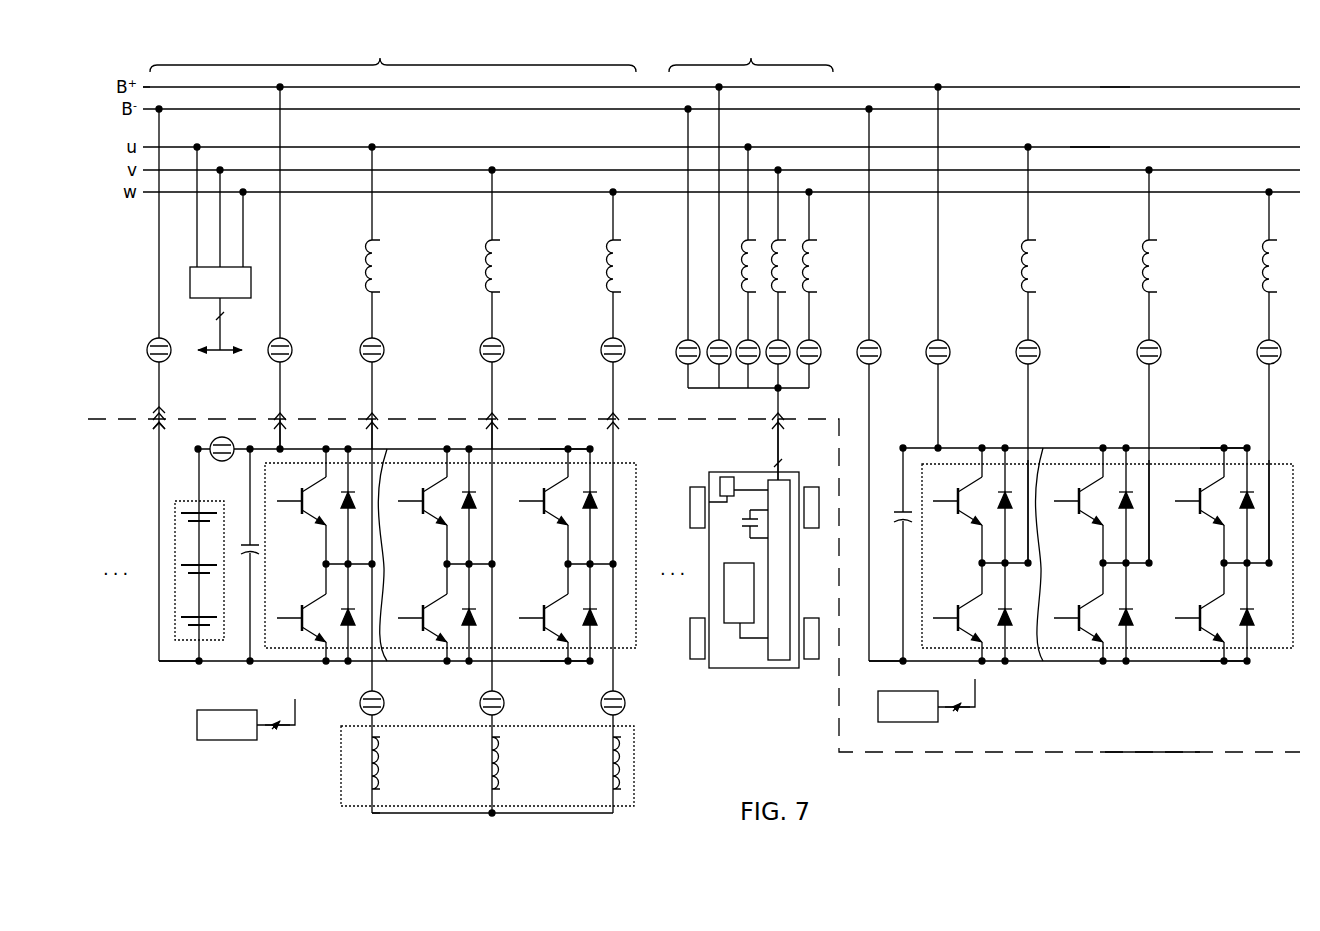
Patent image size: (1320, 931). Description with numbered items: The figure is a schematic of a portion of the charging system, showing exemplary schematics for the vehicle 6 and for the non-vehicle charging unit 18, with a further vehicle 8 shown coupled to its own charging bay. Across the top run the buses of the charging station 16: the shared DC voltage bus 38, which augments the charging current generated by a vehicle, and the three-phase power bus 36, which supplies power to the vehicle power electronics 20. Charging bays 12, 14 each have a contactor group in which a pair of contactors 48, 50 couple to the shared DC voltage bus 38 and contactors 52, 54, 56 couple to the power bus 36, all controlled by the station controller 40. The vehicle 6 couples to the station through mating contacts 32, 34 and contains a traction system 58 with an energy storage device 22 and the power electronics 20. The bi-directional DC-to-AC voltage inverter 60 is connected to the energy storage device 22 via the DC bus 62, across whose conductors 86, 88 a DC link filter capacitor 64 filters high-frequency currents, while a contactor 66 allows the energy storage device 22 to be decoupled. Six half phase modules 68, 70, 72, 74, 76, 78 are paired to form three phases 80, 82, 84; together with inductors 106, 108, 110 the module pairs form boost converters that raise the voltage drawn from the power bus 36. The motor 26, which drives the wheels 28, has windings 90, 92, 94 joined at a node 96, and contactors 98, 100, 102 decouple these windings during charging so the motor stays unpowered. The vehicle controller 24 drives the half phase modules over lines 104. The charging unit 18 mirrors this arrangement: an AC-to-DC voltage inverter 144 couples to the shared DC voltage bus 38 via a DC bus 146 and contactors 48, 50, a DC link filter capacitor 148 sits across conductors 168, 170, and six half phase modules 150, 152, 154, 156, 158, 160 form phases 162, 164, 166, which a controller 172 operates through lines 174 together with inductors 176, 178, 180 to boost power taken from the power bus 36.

The vehicle 6 is at (250, 789).
The vehicle 8 is at (742, 668).
The charging bay 12 is at (393, 54).
The charging bay 14 is at (751, 54).
The charging station 16 is at (140, 254).
The non-vehicle charging unit 18 is at (1123, 698).
The power electronics 20 is at (167, 733).
The energy storage device 22 is at (199, 501).
The controller 24 is at (482, 651).
The motor 26 is at (634, 757).
The driving wheels 28 is at (690, 491).
The mating contact 32 is at (153, 423).
The mating contact 34 is at (153, 414).
The power bus 36 is at (1090, 192).
The shared DC voltage bus 38 is at (1115, 87).
The controller 40 is at (220, 308).
The contactor 48 is at (152, 344).
The contactor 50 is at (274, 344).
The contactor 52 is at (365, 344).
The contactor 54 is at (486, 344).
The contactor 56 is at (607, 344).
The traction system 58 is at (143, 668).
The bi-directional DC-to-AC voltage inverter 60 is at (636, 545).
The DC bus 62 is at (392, 555).
The DC link filter capacitor 64 is at (250, 545).
The contactor 66 is at (231, 457).
The half phase module 68 is at (304, 514).
The half phase module 70 is at (304, 633).
The half phase module 72 is at (424, 514).
The half phase module 74 is at (424, 633).
The half phase module 76 is at (545, 514).
The half phase module 78 is at (545, 633).
The phase 80 is at (338, 432).
The phase 82 is at (458, 432).
The phase 84 is at (578, 432).
The conductor 86 is at (560, 449).
The conductor 88 is at (565, 663).
The winding 90 is at (384, 768).
The winding 92 is at (504, 768).
The winding 94 is at (610, 754).
The node 96 is at (494, 816).
The contactor 98 is at (384, 698).
The contactor 100 is at (504, 698).
The contactor 102 is at (625, 698).
The lines 104 is at (286, 728).
The inductor 106 is at (376, 258).
The inductor 108 is at (496, 258).
The inductor 110 is at (610, 258).
The AC-to-DC voltage inverter 144 is at (920, 462).
The DC bus 146 is at (1107, 554).
The DC link filter capacitor 148 is at (903, 512).
The half phase module 150 is at (959, 514).
The half phase module 152 is at (959, 633).
The half phase module 154 is at (1080, 514).
The half phase module 156 is at (1080, 633).
The half phase module 158 is at (1200, 514).
The half phase module 160 is at (1200, 633).
The phase 162 is at (996, 432).
The phase 164 is at (1117, 432).
The phase 166 is at (1238, 432).
The conductor 168 is at (1208, 448).
The conductor 170 is at (1213, 663).
The controller 172 is at (926, 700).
The lines 174 is at (966, 709).
The inductor 176 is at (1032, 258).
The inductor 178 is at (1153, 258).
The inductor 180 is at (1265, 258).